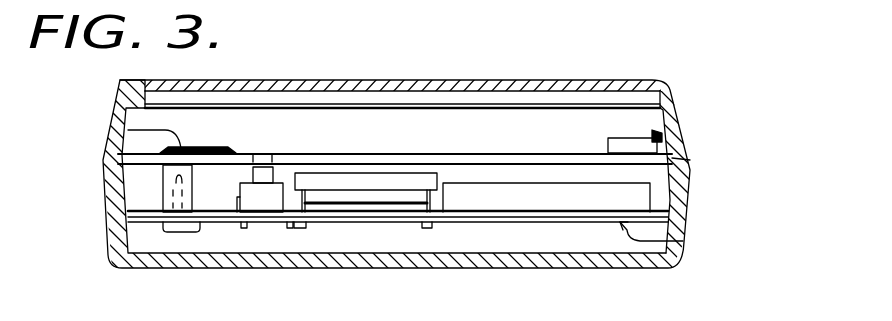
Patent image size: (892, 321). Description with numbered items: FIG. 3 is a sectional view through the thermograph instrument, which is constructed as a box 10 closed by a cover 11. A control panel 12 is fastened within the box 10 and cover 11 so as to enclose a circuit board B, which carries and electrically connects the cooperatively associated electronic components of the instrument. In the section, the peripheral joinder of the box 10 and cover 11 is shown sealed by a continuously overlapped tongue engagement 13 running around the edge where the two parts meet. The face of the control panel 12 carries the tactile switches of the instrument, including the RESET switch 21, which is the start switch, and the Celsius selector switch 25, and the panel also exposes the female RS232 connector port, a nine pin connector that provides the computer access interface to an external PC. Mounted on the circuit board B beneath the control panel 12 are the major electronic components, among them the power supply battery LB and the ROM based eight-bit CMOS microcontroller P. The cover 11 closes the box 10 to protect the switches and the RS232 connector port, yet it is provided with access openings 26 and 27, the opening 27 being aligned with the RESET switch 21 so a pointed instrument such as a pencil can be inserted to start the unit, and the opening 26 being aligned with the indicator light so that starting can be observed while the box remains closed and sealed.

The box 10 is at (104, 207).
The cover 11 is at (429, 82).
The control panel 12 is at (474, 155).
The continuously overlapped tongue engagement 13 is at (688, 157).
The RESET switch 21 is at (273, 195).
The Celsius switch 25 is at (128, 130).
The access opening 26 is at (272, 86).
The access opening 27 is at (170, 88).
The power supply battery LB is at (412, 132).
The microcontroller P is at (567, 194).
The RS232 connector port RS232 is at (672, 120).
The circuit board B is at (683, 241).